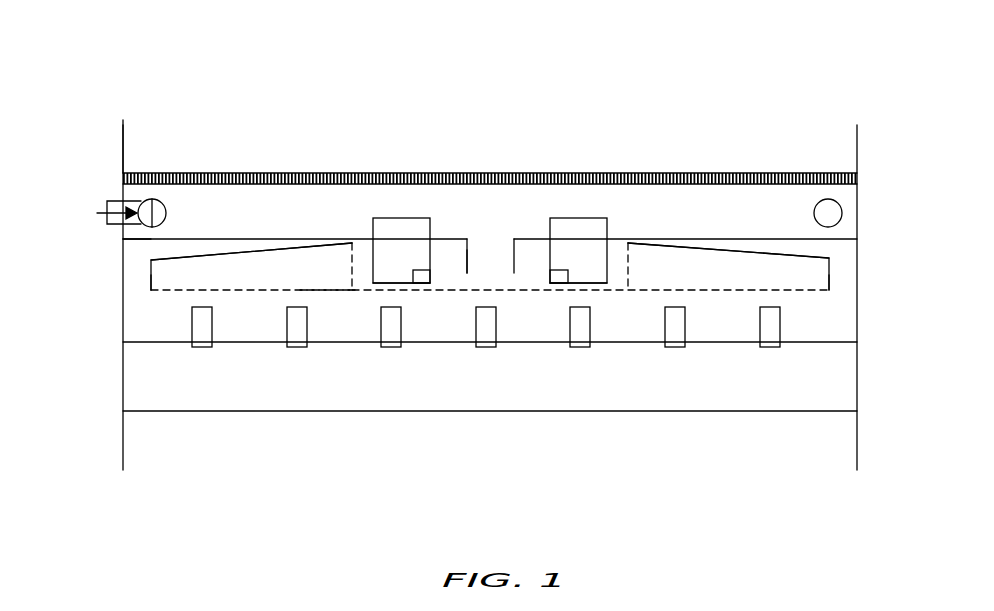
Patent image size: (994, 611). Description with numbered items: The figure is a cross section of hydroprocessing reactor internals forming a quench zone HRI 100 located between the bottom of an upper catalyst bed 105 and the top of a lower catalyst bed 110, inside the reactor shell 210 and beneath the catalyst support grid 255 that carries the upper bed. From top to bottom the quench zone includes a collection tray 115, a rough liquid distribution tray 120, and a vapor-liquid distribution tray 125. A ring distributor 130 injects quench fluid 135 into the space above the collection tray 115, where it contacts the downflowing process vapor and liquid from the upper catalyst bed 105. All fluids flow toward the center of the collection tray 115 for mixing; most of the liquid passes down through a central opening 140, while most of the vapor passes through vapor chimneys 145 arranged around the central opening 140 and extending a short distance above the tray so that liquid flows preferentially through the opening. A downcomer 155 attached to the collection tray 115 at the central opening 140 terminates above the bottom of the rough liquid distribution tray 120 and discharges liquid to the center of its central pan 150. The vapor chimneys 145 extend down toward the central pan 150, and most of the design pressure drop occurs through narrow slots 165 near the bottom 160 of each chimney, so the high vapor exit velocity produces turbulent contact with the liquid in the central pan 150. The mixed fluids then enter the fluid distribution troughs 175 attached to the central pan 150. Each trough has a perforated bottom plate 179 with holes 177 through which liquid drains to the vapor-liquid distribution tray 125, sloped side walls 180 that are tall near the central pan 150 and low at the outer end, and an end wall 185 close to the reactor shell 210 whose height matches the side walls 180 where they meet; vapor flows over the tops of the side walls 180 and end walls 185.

The quench zone HRI 100 is at (848, 84).
The upper catalyst bed 105 is at (211, 143).
The lower catalyst bed 110 is at (229, 449).
The collection tray 115 is at (138, 240).
The rough liquid distribution tray 120 is at (165, 283).
The vapor-liquid distribution tray 125 is at (155, 330).
The ring distributor 130 is at (147, 205).
The quench fluid 135 is at (108, 204).
The central opening 140 is at (473, 247).
The vapor chimneys 145 is at (388, 218).
The central pan 150 is at (503, 286).
The downcomer 155 is at (467, 262).
The bottom 160 is at (378, 282).
The slots 165 is at (557, 273).
The fluid distribution troughs 175 is at (300, 270).
The holes 177 is at (252, 290).
The bottom plate 179 is at (333, 290).
The side walls 180 is at (237, 255).
The end wall 185 is at (150, 285).
The reactor shell 210 is at (127, 257).
The catalyst support grid 255 is at (746, 181).